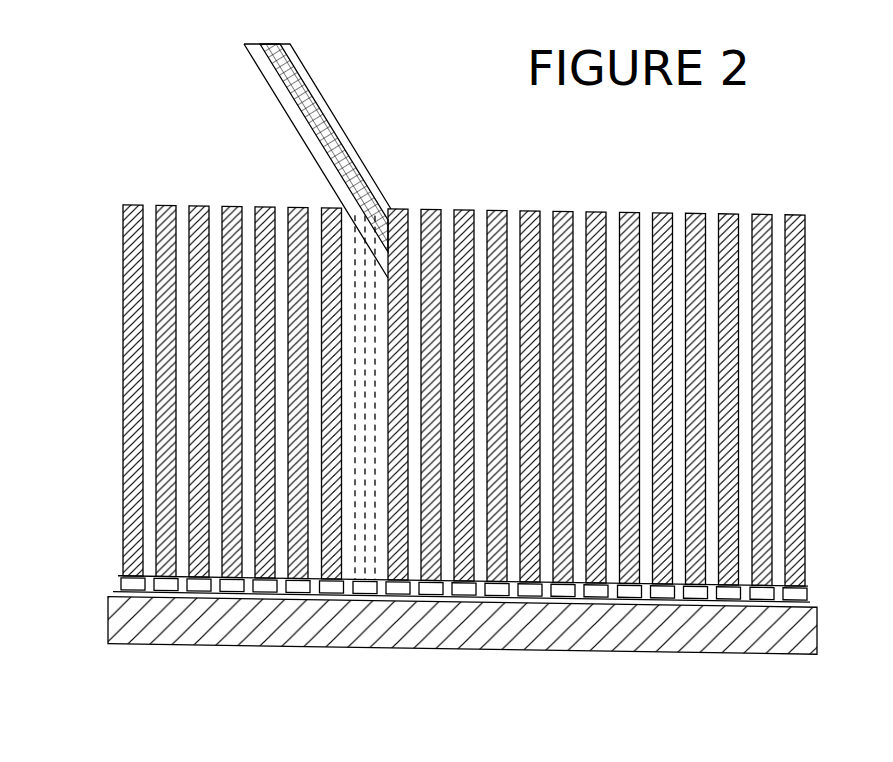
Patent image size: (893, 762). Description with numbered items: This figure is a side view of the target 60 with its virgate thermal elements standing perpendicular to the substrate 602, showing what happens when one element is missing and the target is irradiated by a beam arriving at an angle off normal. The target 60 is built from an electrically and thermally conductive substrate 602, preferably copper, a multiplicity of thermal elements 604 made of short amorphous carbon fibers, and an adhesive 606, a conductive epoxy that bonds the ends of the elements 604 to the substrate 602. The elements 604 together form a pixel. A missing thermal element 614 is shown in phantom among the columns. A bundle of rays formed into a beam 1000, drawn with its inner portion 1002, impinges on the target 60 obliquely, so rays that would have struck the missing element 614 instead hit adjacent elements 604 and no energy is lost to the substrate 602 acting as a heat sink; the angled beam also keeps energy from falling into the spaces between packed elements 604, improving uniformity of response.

The target 60 is at (265, 654).
The substrate 602 is at (110, 620).
The thermal elements 604 is at (123, 481).
The adhesive 606 is at (113, 592).
The missing thermal element 614 is at (363, 258).
The beam 1000 is at (363, 168).
The probe conductive core 1002 is at (321, 110).